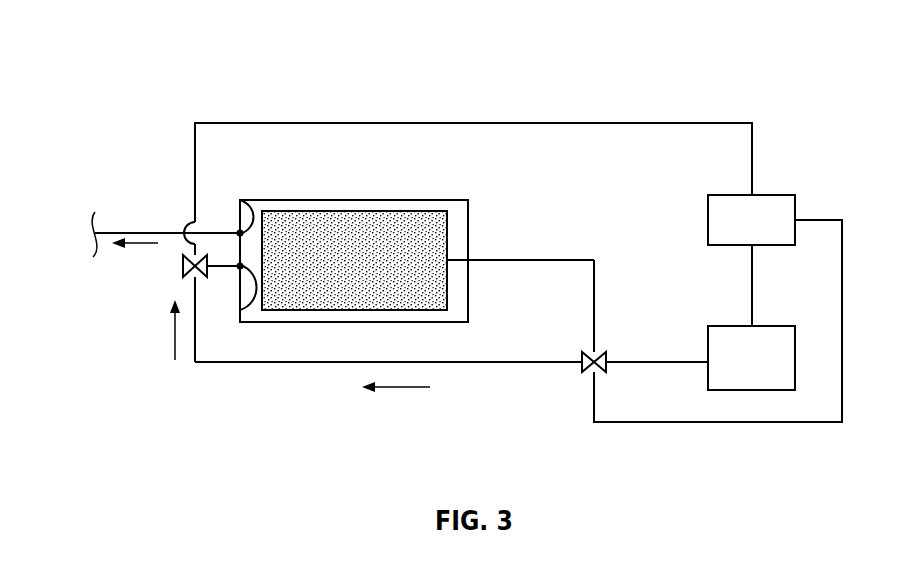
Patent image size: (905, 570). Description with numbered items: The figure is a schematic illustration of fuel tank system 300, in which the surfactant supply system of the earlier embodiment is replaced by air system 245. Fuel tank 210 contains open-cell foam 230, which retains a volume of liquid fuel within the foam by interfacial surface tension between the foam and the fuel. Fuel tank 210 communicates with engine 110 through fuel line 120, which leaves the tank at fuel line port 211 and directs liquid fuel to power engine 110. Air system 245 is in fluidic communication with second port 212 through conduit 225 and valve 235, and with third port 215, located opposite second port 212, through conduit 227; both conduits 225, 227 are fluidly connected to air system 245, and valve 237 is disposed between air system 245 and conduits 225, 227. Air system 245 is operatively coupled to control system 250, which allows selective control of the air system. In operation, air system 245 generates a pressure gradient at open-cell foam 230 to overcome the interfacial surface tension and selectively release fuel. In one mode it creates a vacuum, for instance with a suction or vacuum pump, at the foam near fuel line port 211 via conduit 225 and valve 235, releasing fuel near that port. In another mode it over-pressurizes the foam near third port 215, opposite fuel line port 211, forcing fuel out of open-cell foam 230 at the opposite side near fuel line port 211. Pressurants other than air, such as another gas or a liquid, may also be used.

The fuel tank system 300 is at (378, 271).
The engine 110 is at (70, 212).
The fuel line 120 is at (143, 233).
The fuel tank 210 is at (468, 215).
The fuel line port 211 is at (240, 201).
The second port 212 is at (240, 310).
The third port 215 is at (470, 265).
The conduit 225 is at (260, 363).
The conduit 227 is at (595, 310).
The open-cell foam 230 is at (458, 260).
The valve 235 is at (190, 270).
The valve 237 is at (583, 365).
The air system 245 is at (775, 372).
The control system 250 is at (775, 236).